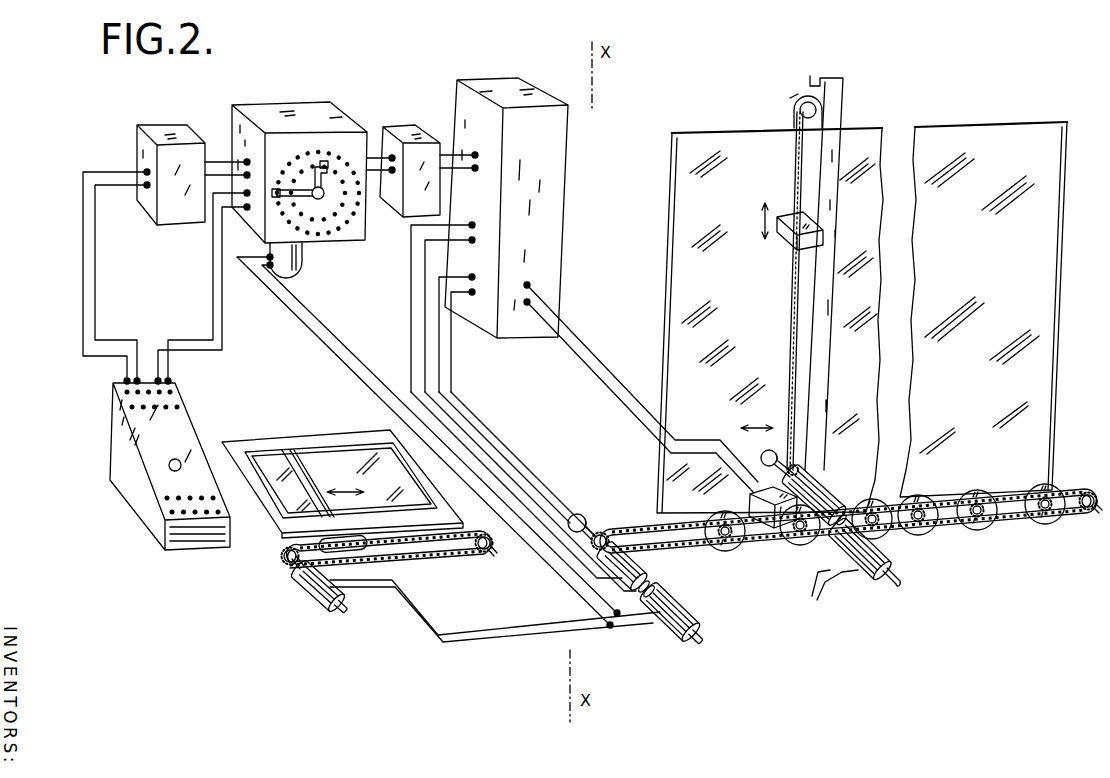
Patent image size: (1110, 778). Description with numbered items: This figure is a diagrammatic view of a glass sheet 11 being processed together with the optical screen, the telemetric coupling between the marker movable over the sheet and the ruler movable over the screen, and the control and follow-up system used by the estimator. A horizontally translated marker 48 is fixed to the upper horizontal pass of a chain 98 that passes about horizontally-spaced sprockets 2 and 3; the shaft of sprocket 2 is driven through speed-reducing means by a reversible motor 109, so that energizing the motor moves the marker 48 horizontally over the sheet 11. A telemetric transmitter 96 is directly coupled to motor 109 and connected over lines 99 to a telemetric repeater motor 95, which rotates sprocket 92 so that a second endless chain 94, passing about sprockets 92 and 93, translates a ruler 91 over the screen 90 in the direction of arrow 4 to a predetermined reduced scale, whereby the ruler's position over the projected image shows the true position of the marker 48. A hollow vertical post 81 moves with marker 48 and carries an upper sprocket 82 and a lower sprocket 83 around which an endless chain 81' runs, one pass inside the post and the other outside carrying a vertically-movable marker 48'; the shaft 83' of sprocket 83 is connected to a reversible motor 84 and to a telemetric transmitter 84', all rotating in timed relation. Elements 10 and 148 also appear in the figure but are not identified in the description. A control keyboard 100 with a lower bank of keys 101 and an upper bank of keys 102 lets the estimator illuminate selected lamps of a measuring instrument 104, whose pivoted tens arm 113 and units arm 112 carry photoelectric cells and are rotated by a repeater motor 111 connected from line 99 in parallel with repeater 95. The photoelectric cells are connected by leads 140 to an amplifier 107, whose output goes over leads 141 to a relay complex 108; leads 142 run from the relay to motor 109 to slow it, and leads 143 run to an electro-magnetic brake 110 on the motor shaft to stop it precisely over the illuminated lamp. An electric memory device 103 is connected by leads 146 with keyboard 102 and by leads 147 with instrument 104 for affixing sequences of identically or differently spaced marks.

The sprocket 2 is at (603, 532).
The sprocket 3 is at (1091, 514).
The arrow 4 is at (340, 493).
The conveyor rollers 10 is at (740, 549).
The glass sheet 11 is at (981, 133).
The marker 48 is at (773, 530).
The vertical marker 48' is at (783, 238).
The vertical post 81 is at (833, 273).
The endless chain 81' is at (772, 291).
The sprocket 82 is at (800, 110).
The sprocket 83 is at (808, 463).
The shaft 83' is at (881, 594).
The reversible motor 84 is at (817, 497).
The telemetric transmitter 84' is at (882, 549).
The screen 90 is at (306, 452).
The ruler 91 is at (307, 478).
The sprocket 92 is at (284, 565).
The sprocket 93 is at (488, 558).
The endless chain 94 is at (441, 557).
The telemetric repeater motor 95 is at (311, 590).
The telemetric transmitter 96 is at (674, 603).
The chain 98 is at (634, 527).
The lines 99 is at (508, 628).
The control keyboard 100 is at (102, 455).
The lower bank of keys 101 is at (165, 507).
The upper bank of keys 102 is at (133, 403).
The electric memory device 103 is at (166, 128).
The measuring instrument 104 is at (283, 107).
The amplifier 107 is at (402, 122).
The relay complex 108 is at (498, 78).
The reversible motor 109 is at (630, 568).
The electro-magnetic brake 110 is at (586, 515).
The repeater motor 111 is at (300, 264).
The units arm 112 is at (325, 166).
The tens arm 113 is at (284, 190).
The leads 140 is at (371, 155).
The leads 141 is at (457, 163).
The leads 142 is at (405, 304).
The leads 143 is at (493, 437).
The leads 146 is at (83, 270).
The leads 147 is at (219, 160).
The leads 148 is at (588, 363).